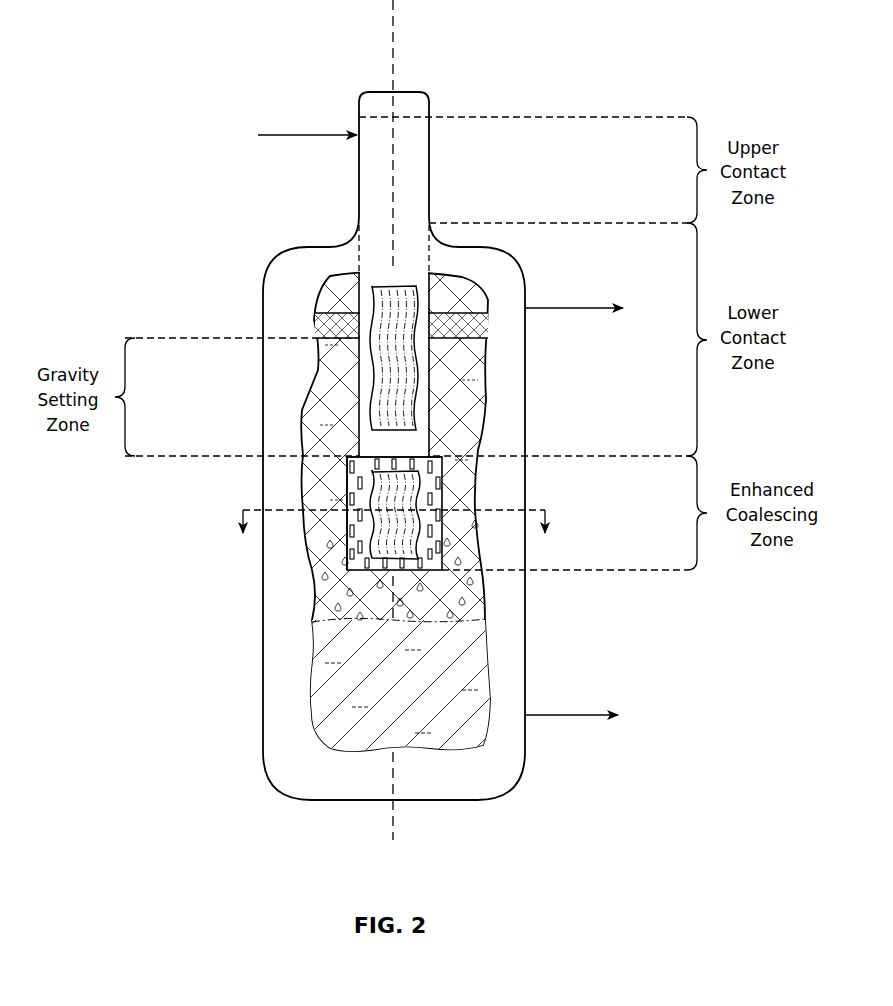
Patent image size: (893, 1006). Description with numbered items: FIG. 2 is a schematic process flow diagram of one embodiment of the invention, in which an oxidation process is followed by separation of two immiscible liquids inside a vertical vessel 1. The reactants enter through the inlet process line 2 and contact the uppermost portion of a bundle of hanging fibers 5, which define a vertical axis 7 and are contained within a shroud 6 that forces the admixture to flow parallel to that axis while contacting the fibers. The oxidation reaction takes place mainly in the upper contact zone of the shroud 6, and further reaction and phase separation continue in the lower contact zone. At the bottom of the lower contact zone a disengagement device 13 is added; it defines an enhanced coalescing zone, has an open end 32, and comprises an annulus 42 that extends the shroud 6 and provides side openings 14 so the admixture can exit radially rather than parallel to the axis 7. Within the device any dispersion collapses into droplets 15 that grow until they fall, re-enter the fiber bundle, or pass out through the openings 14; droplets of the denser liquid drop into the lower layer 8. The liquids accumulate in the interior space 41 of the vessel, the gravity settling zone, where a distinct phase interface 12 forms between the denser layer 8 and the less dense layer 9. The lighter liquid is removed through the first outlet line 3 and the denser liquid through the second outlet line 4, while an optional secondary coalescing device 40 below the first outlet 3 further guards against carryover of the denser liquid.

The vertical vessel 1 is at (488, 232).
The inlet process line 2 is at (297, 129).
The first outlet process line 3 is at (583, 304).
The second outlet process line 4 is at (594, 723).
The hanging fibers 5 is at (376, 359).
The shroud 6 is at (430, 412).
The vertical axis 7 is at (414, 47).
The layer of denser liquid 8 is at (468, 712).
The layer of less dense liquid 9 is at (318, 598).
The phase interface 12 is at (452, 630).
The disengagement device 13 is at (347, 549).
The openings in outer wall 14 is at (340, 490).
The droplets 15 is at (458, 488).
The open end 32 is at (430, 578).
The secondary coalescing device 40 is at (338, 310).
The interior space of vessel 41 is at (330, 438).
The annulus 42 is at (348, 462).